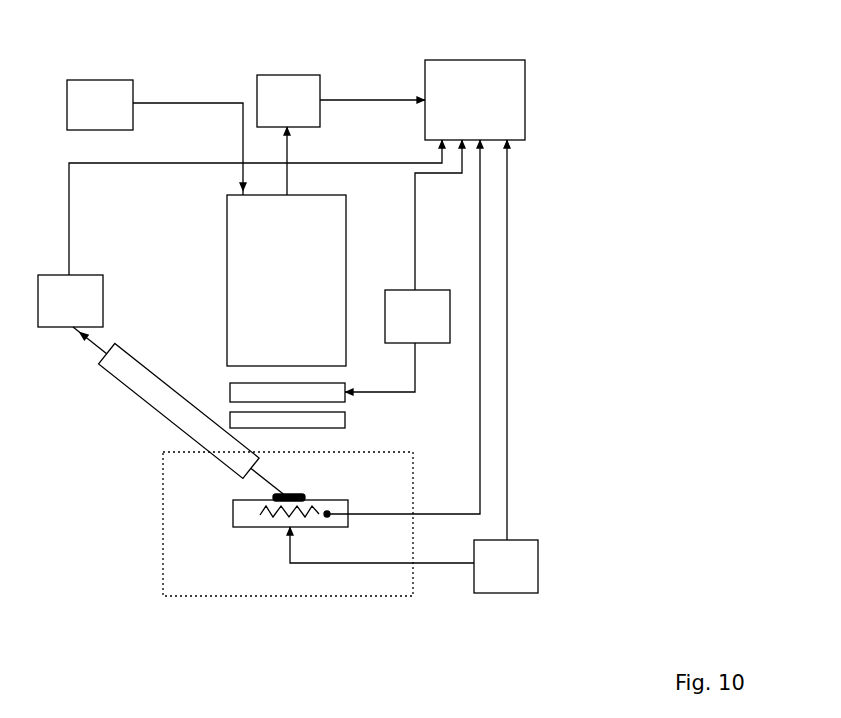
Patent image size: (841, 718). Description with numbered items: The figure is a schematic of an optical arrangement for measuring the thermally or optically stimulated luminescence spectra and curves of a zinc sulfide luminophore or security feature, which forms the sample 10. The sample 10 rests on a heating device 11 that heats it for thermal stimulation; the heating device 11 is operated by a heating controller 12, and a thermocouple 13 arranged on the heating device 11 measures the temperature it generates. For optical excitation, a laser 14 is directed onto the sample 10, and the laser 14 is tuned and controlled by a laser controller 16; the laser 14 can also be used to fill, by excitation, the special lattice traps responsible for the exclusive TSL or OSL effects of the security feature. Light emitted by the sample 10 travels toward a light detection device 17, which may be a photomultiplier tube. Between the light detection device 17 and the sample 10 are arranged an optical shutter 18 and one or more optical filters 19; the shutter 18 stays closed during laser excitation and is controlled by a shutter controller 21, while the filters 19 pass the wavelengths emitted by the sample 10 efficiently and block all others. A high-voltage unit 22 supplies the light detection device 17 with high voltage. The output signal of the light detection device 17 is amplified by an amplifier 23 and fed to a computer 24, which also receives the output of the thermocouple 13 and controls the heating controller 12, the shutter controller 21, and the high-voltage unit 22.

The sample 10 is at (300, 497).
The heating device 11 is at (268, 519).
The heating controller 12 is at (525, 558).
The thermocouple 13 is at (329, 516).
The laser 14 is at (130, 390).
The laser controller 16 is at (97, 293).
The light detection device 17 is at (226, 237).
The optical shutter 18 is at (237, 396).
The optical filters 19 is at (347, 417).
The shutter controller 21 is at (391, 300).
The high-voltage unit 22 is at (77, 125).
The amplifier 23 is at (317, 83).
The computer 24 is at (498, 63).